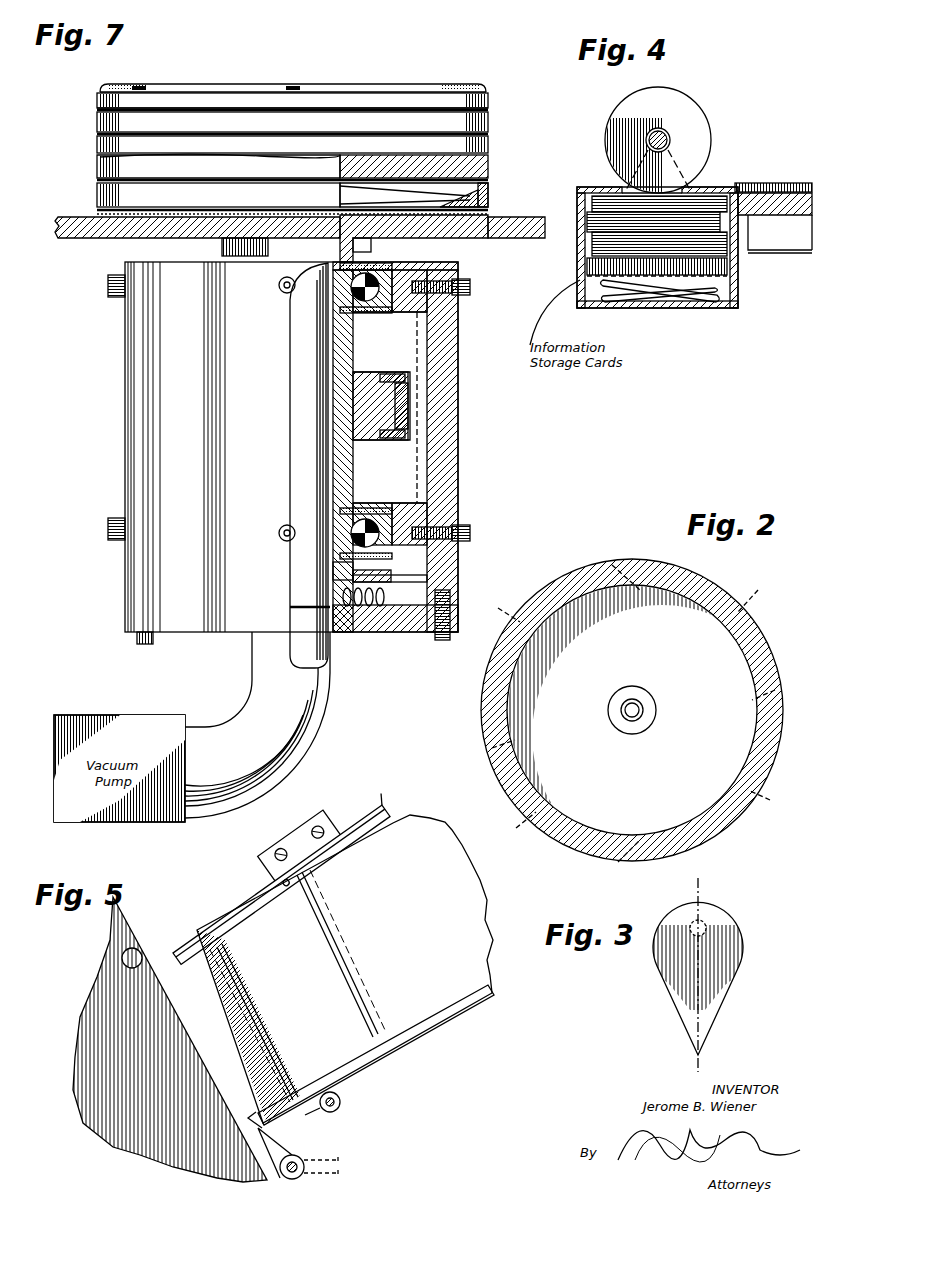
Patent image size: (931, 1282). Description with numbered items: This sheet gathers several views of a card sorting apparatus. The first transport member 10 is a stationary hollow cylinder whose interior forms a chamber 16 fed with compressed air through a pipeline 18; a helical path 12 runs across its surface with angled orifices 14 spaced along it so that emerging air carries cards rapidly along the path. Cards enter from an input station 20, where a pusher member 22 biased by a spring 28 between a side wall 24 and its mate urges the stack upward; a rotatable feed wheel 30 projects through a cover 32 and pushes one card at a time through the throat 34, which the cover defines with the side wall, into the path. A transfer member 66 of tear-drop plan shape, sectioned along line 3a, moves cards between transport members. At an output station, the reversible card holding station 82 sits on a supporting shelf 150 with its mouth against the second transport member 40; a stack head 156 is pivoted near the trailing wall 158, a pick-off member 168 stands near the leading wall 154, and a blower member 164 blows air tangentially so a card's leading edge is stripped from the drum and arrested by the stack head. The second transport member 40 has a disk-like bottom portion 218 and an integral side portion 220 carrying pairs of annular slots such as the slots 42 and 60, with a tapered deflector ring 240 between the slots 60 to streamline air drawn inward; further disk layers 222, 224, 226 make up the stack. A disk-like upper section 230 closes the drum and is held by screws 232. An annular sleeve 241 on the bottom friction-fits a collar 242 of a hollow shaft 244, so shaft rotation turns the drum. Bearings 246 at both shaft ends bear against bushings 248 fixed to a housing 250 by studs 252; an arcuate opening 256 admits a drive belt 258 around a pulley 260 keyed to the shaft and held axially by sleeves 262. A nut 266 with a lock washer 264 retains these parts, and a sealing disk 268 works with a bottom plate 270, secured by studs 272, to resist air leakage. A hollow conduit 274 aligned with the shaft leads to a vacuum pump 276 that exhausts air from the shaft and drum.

In FIG. 4, the first transport member 10 is at (805, 210).
In FIG. 2, the first transport member 10 is at (545, 590).
In FIG. 4, the helical path 12 is at (800, 184).
In FIG. 4, the angled orifices 14 is at (792, 228).
In FIG. 2, the angled orifices 14 is at (612, 565).
In FIG. 4, the chamber 16 is at (790, 246).
In FIG. 2, the chamber 16 is at (634, 665).
In FIG. 2, the pipeline 18 is at (640, 707).
In FIG. 4, the input station 20 is at (724, 156).
In FIG. 4, the pusher member 22 is at (585, 268).
In FIG. 4, the side wall 24 is at (580, 302).
In FIG. 4, the spring 28 is at (700, 300).
In FIG. 4, the rotatable feed wheel 30 is at (690, 120).
In FIG. 4, the cover 32 is at (602, 188).
In FIG. 4, the throat 34 is at (737, 186).
In FIG. 7, the second transport member 40 is at (372, 78).
In FIG. 5, the second transport member 40 is at (87, 1055).
In FIG. 7, the pair of annular peripheral slots 42 is at (490, 106).
In FIG. 7, the pair of annular peripheral slots 60 is at (488, 178).
In FIG. 3, the transfer member 66 is at (720, 962).
In FIG. 5, the reversible card holding station 82 is at (388, 924).
In FIG. 7, the supporting shelf 150 is at (72, 226).
In FIG. 5, the leading wall 154 is at (378, 822).
In FIG. 5, the stack head 156 is at (340, 1105).
In FIG. 5, the trailing wall 158 is at (430, 1017).
In FIG. 5, the blower member 164 is at (292, 1155).
In FIG. 5, the pick-off member 168 is at (198, 925).
In FIG. 7, the disk-like bottom portion 218 is at (440, 231).
In FIG. 7, the side portion 220 is at (97, 124).
In FIG. 7, the disc spacer 222 is at (97, 110).
In FIG. 7, the disc 224 is at (210, 132).
In FIG. 7, the disc 226 is at (245, 110).
In FIG. 7, the upper section 230 is at (100, 89).
In FIG. 7, the screws 232 is at (148, 86).
In FIG. 7, the deflector rings 240 is at (478, 195).
In FIG. 7, the annular sleeve 241 is at (362, 246).
In FIG. 7, the collar 242 is at (371, 245).
In FIG. 7, the hollow shaft 244 is at (330, 462).
In FIG. 7, the bearings 246 is at (360, 287).
In FIG. 7, the bushings 248 is at (408, 315).
In FIG. 7, the housing 250 is at (180, 345).
In FIG. 7, the studs 252 is at (108, 285).
In FIG. 7, the arcuate opening 256 is at (410, 420).
In FIG. 7, the drive belt 258 is at (405, 400).
In FIG. 7, the pulley 260 is at (350, 405).
In FIG. 7, the sleeves 262 is at (350, 365).
In FIG. 7, the lock washer 264 is at (340, 573).
In FIG. 7, the nut 266 is at (340, 590).
In FIG. 7, the sealing disk 268 is at (390, 580).
In FIG. 7, the bottom plate 270 is at (400, 632).
In FIG. 7, the studs 272 is at (150, 640).
In FIG. 7, the hollow conduit 274 is at (310, 703).
In FIG. 7, the vacuum pump 276 is at (185, 720).
In FIG. 3, the section line 3a is at (713, 891).